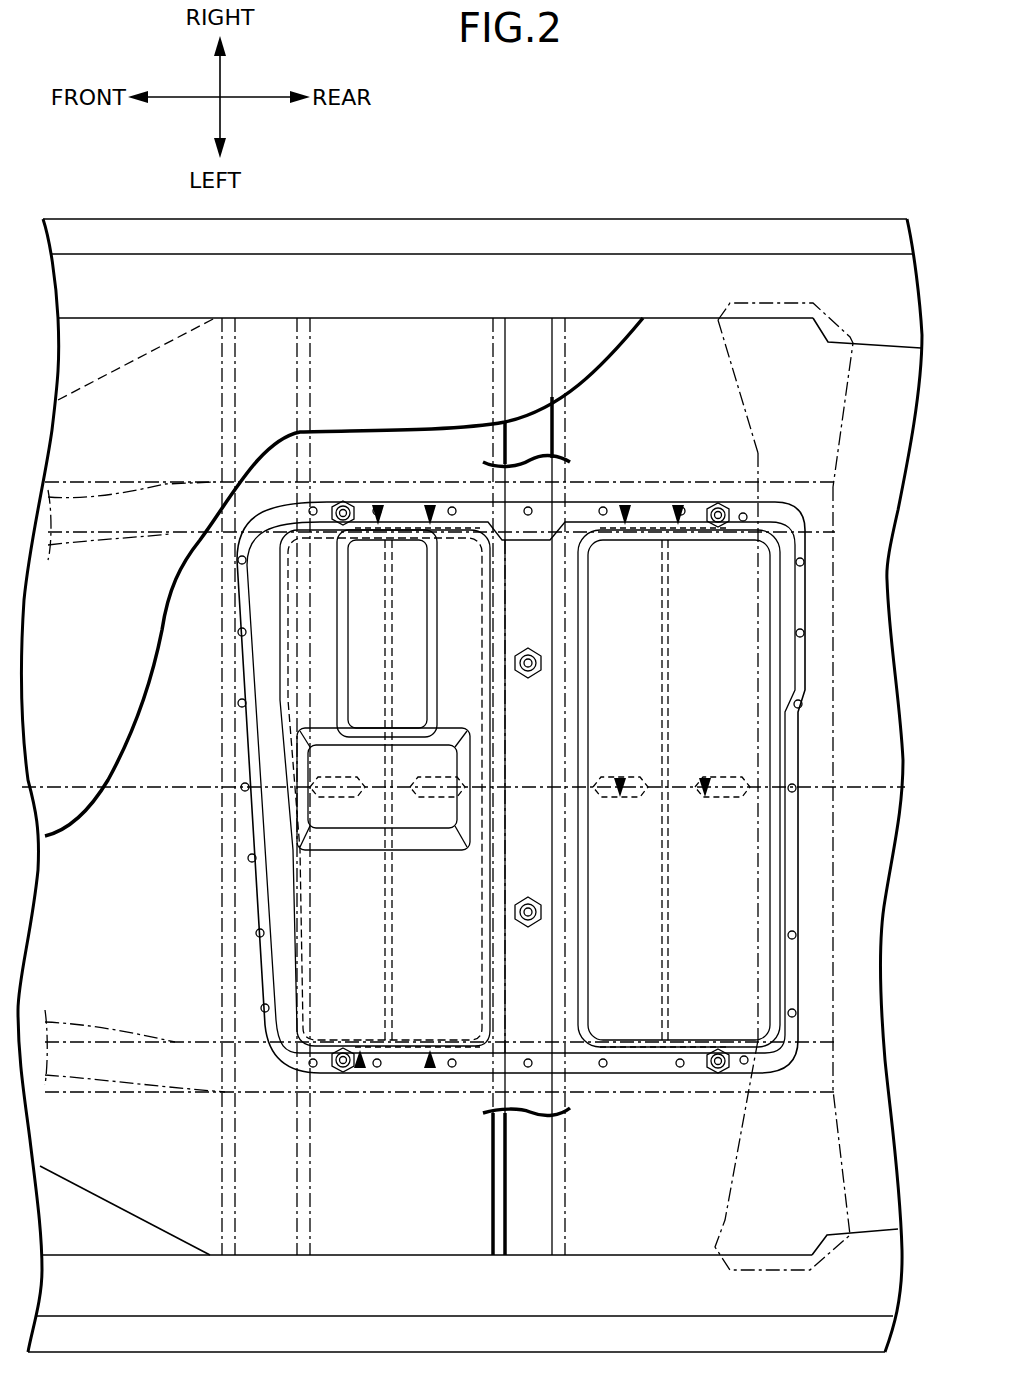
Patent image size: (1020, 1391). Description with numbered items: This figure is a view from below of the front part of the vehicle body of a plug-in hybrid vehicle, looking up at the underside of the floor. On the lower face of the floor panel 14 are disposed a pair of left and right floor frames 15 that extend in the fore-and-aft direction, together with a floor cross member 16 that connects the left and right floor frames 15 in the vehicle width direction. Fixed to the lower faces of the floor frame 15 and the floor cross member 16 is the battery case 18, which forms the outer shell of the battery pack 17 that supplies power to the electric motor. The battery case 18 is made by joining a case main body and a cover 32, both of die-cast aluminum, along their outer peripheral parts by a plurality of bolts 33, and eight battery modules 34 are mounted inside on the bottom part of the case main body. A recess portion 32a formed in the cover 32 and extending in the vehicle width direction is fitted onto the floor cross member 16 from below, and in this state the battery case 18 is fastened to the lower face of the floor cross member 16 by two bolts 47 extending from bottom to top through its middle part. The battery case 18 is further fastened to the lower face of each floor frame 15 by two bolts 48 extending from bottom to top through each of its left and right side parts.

The floor panel 14 is at (590, 349).
The floor frame 15 is at (185, 483).
The floor cross member 16 is at (540, 423).
The battery pack 17 is at (215, 883).
The battery case 18 is at (815, 724).
The cover 32 is at (434, 1085).
The recess portion 32a is at (535, 805).
The bolt 33 is at (528, 506).
The battery module 34 is at (530, 789).
The bolt 47 is at (528, 650).
The bolt 48 is at (343, 503).